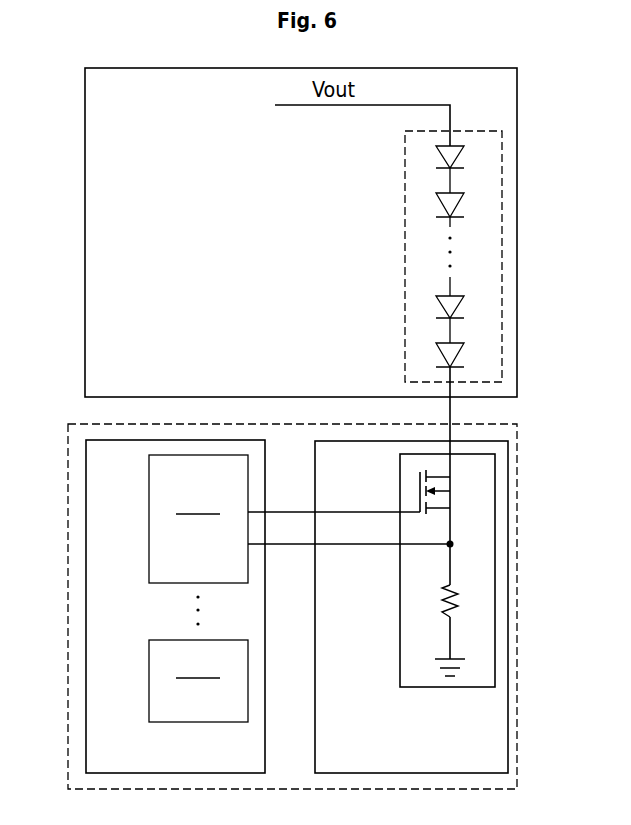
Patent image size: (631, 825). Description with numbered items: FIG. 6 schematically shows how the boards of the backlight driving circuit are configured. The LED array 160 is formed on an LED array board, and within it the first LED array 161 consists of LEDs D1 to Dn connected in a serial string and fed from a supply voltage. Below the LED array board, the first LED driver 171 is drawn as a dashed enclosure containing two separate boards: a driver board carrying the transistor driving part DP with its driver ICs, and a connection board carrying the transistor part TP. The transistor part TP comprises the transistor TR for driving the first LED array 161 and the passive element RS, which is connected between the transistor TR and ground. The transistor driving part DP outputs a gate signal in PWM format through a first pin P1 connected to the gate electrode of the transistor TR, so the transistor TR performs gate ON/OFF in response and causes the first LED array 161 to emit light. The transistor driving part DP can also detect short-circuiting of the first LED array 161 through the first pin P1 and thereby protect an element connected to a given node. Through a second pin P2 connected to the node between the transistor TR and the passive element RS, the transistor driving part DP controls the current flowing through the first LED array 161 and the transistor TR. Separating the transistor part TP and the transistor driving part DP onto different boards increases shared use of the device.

The LED array 160 is at (517, 277).
The first LED array 161 is at (490, 256).
The first LED driver 171 is at (517, 612).
The transistor driving part DP is at (149, 517).
The transistor part TP is at (449, 607).
The transistor TR is at (452, 491).
The passive element RS is at (465, 601).
The LED D1 is at (462, 156).
The LED Dn is at (462, 355).
The first pin P1 is at (334, 499).
The second pin P2 is at (351, 533).